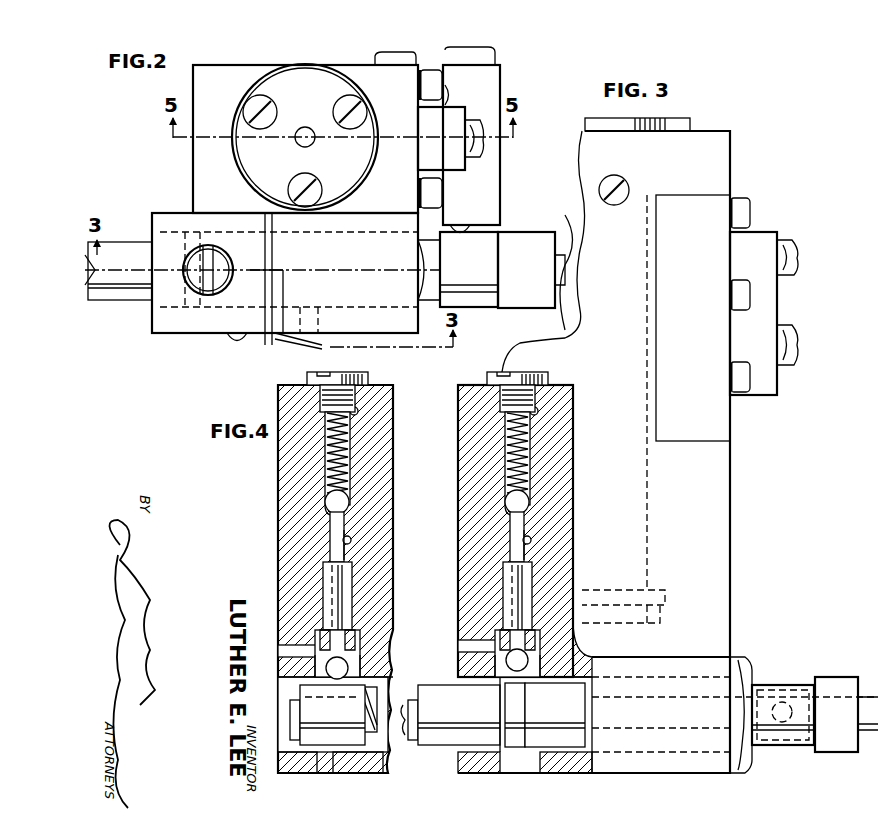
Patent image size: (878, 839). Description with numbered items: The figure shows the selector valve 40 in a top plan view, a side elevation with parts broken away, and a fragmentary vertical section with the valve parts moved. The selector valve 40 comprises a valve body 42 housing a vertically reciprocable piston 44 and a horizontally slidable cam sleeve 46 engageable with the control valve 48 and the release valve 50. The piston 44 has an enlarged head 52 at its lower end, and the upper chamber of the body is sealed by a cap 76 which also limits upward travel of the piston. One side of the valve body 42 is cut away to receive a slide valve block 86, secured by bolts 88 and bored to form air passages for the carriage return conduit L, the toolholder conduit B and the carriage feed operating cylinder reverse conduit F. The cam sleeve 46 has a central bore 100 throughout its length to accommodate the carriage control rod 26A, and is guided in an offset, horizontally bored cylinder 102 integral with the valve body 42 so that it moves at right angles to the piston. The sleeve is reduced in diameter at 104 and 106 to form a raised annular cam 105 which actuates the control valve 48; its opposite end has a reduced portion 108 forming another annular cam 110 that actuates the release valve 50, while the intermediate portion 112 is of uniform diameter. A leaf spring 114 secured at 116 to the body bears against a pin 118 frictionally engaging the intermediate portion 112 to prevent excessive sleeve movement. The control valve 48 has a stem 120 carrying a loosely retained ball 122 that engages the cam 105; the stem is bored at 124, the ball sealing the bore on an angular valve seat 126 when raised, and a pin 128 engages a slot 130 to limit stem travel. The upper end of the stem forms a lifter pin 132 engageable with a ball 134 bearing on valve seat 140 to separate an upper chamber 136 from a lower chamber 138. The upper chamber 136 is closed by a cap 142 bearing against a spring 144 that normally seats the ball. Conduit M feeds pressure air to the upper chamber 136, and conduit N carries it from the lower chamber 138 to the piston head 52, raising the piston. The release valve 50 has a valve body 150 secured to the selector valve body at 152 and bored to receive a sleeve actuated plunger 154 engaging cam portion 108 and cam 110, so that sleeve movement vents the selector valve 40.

In FIG. 2, the selector valve 40 is at (138, 160).
In FIG. 3, the selector valve 40 is at (734, 128).
In FIG. 2, the valve body 42 is at (193, 172).
In FIG. 3, the valve body 42 is at (731, 158).
In FIG. 4, the valve body 42 is at (278, 466).
In FIG. 3, the piston 44 is at (649, 491).
In FIG. 2, the cam sleeve 46 is at (480, 300).
In FIG. 3, the cam sleeve 46 is at (556, 752).
In FIG. 4, the cam sleeve 46 is at (344, 752).
In FIG. 3, the control valve 48 is at (492, 476).
In FIG. 4, the control valve 48 is at (310, 513).
In FIG. 2, the release valve 50 is at (514, 155).
In FIG. 3, the release valve 50 is at (785, 685).
In FIG. 3, the enlarged head 52 is at (667, 620).
In FIG. 2, the cap 76 is at (315, 123).
In FIG. 2, the slide valve block 86 is at (452, 159).
In FIG. 3, the slide valve block 86 is at (733, 195).
In FIG. 2, the bolts 88 is at (441, 84).
In FIG. 3, the bolts 88 is at (742, 228).
In FIG. 2, the central bore 100 is at (126, 300).
In FIG. 3, the central bore 100 is at (436, 748).
In FIG. 2, the horizontally bored cylinder 102 is at (308, 235).
In FIG. 3, the horizontally bored cylinder 102 is at (735, 714).
In FIG. 3, the reduced diameter portion 104 is at (482, 750).
In FIG. 4, the reduced diameter portion 104 is at (322, 748).
In FIG. 3, the raised annular cam 105 is at (514, 752).
In FIG. 3, the reduced diameter portion 106 is at (568, 750).
In FIG. 2, the reduced portion 108 is at (483, 263).
In FIG. 3, the reduced portion 108 is at (772, 748).
In FIG. 2, the annular cam 110 is at (538, 263).
In FIG. 3, the annular cam 110 is at (845, 748).
In FIG. 2, the intermediate portion 112 is at (318, 300).
In FIG. 3, the intermediate portion 112 is at (662, 752).
In FIG. 2, the leaf spring 114 is at (270, 347).
In FIG. 2, the leaf spring securing point 116 is at (236, 345).
In FIG. 2, the pin 118 is at (320, 321).
In FIG. 3, the stem 120 is at (505, 662).
In FIG. 4, the stem 120 is at (322, 670).
In FIG. 3, the ball 122 is at (530, 662).
In FIG. 4, the ball 122 is at (350, 665).
In FIG. 3, the bore 124 is at (505, 600).
In FIG. 4, the bore 124 is at (325, 600).
In FIG. 3, the angular valve seat 126 is at (530, 640).
In FIG. 4, the angular valve seat 126 is at (358, 642).
In FIG. 3, the pin 128 is at (480, 640).
In FIG. 4, the pin 128 is at (292, 642).
In FIG. 3, the slot 130 is at (492, 640).
In FIG. 4, the slot 130 is at (278, 650).
In FIG. 3, the lifter pin 132 is at (510, 522).
In FIG. 4, the lifter pin 132 is at (330, 540).
In FIG. 3, the ball 134 is at (505, 504).
In FIG. 4, the ball 134 is at (325, 505).
In FIG. 3, the upper chamber 136 is at (531, 479).
In FIG. 4, the upper chamber 136 is at (351, 479).
In FIG. 3, the lower chamber 138 is at (527, 555).
In FIG. 4, the lower chamber 138 is at (347, 558).
In FIG. 3, the valve seat 140 is at (531, 506).
In FIG. 4, the valve seat 140 is at (350, 508).
In FIG. 2, the cap 142 is at (222, 262).
In FIG. 3, the cap 142 is at (540, 376).
In FIG. 4, the cap 142 is at (365, 378).
In FIG. 3, the spring 144 is at (528, 460).
In FIG. 4, the spring 144 is at (347, 463).
In FIG. 2, the valve body 150 is at (501, 173).
In FIG. 2, the release valve securing point 152 is at (448, 97).
In FIG. 2, the plunger 154 is at (480, 228).
In FIG. 3, the plunger 154 is at (790, 720).
In FIG. 2, the carriage control rod 26A is at (97, 255).
In FIG. 3, the carriage control rod 26A is at (412, 700).
In FIG. 4, the carriage control rod 26A is at (288, 712).
In FIG. 2, the carriage feed operating cylinder reverse conduit F is at (470, 152).
In FIG. 3, the carriage feed operating cylinder reverse conduit F is at (786, 242).
In FIG. 3, the toolholder conduit B is at (785, 365).
In FIG. 2, the carriage return conduit L is at (378, 55).
In FIG. 3, the conduit M is at (537, 415).
In FIG. 4, the conduit M is at (358, 412).
In FIG. 3, the conduit N is at (531, 540).
In FIG. 4, the conduit N is at (351, 540).